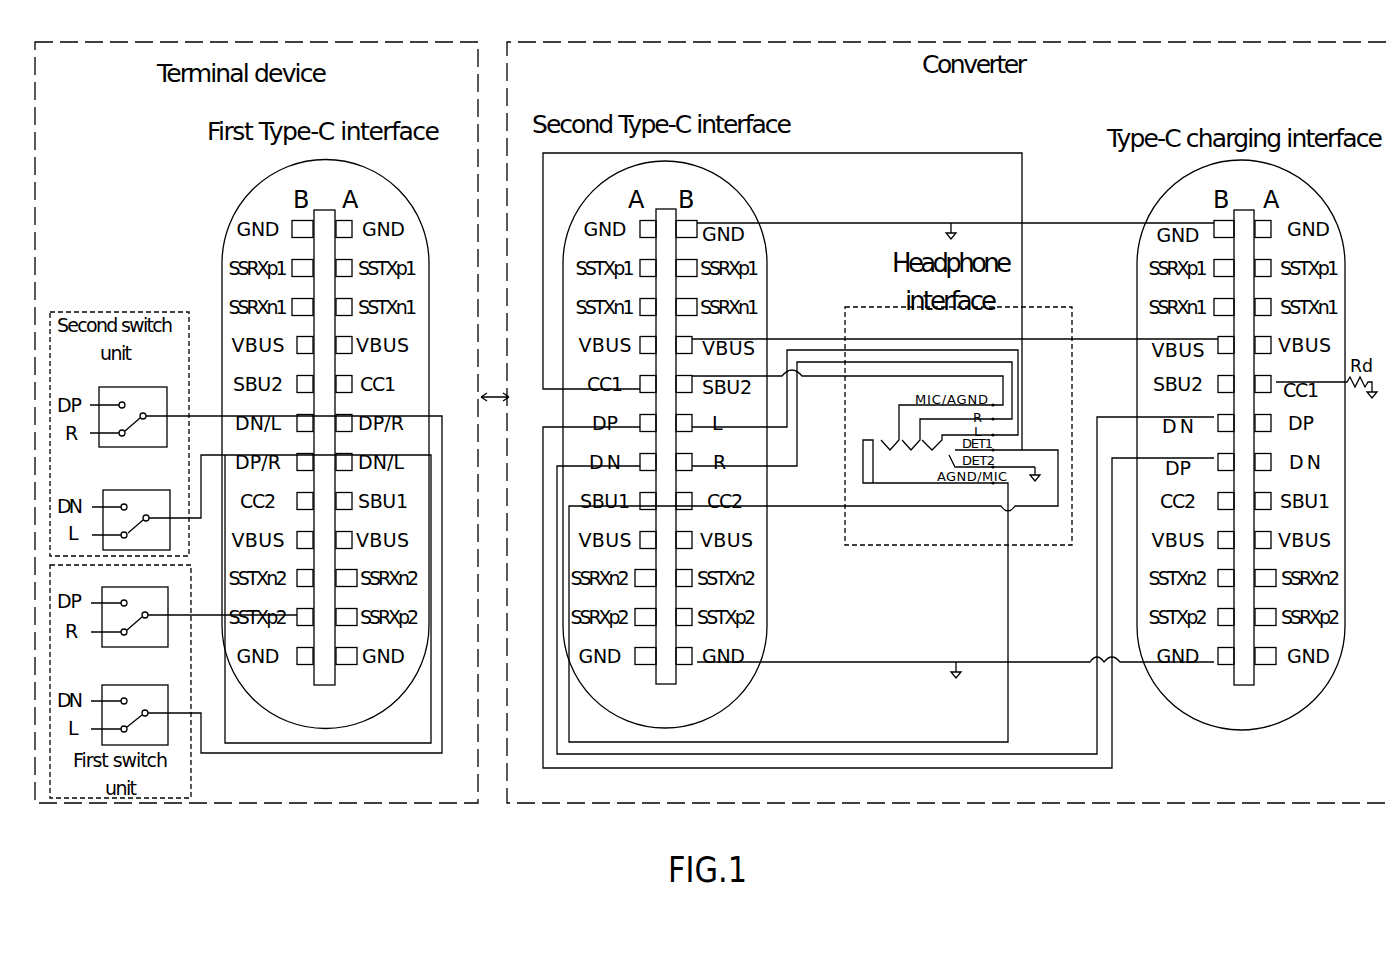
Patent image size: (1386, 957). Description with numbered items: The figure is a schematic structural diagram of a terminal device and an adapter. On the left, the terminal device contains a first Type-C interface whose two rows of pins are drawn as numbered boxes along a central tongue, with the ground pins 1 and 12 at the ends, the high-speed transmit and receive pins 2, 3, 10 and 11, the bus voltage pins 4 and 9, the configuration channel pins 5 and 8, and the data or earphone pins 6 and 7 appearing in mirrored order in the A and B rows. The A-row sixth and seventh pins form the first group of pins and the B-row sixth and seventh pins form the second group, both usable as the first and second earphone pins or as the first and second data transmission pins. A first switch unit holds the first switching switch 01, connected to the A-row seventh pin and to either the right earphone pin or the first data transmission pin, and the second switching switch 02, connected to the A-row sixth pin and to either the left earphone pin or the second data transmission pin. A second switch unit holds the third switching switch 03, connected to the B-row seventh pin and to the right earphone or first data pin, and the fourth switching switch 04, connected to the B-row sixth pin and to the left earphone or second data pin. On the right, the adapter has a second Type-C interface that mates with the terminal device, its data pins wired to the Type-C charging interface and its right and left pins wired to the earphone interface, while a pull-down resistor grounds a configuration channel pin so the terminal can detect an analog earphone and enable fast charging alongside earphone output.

The first switching switch 01 is at (127, 607).
The second switching switch 02 is at (128, 702).
The third switching switch 03 is at (126, 406).
The fourth switching switch 04 is at (129, 508).
The pin 1 (GND) 1 is at (784, 443).
The pin 2 (SSTXp1/SSTXp2) 2 is at (784, 443).
The pin 3 (SSTXn1/SSTXn2) 3 is at (784, 443).
The pin 4 (VBUS) 4 is at (784, 443).
The pin 5 (CC1/CC2) 5 is at (784, 443).
The pin 6 (DP) 6 is at (784, 443).
The pin 7 (DN) 7 is at (784, 443).
The pin 8 (SBU1/SBU2) 8 is at (784, 443).
The pin 9 (VBUS) 9 is at (784, 443).
The pin 10 (SSRXn1/SSRXn2) 10 is at (784, 443).
The pin 11 (SSRXp1/SSRXp2) 11 is at (784, 443).
The pin 12 (GND) 12 is at (784, 443).